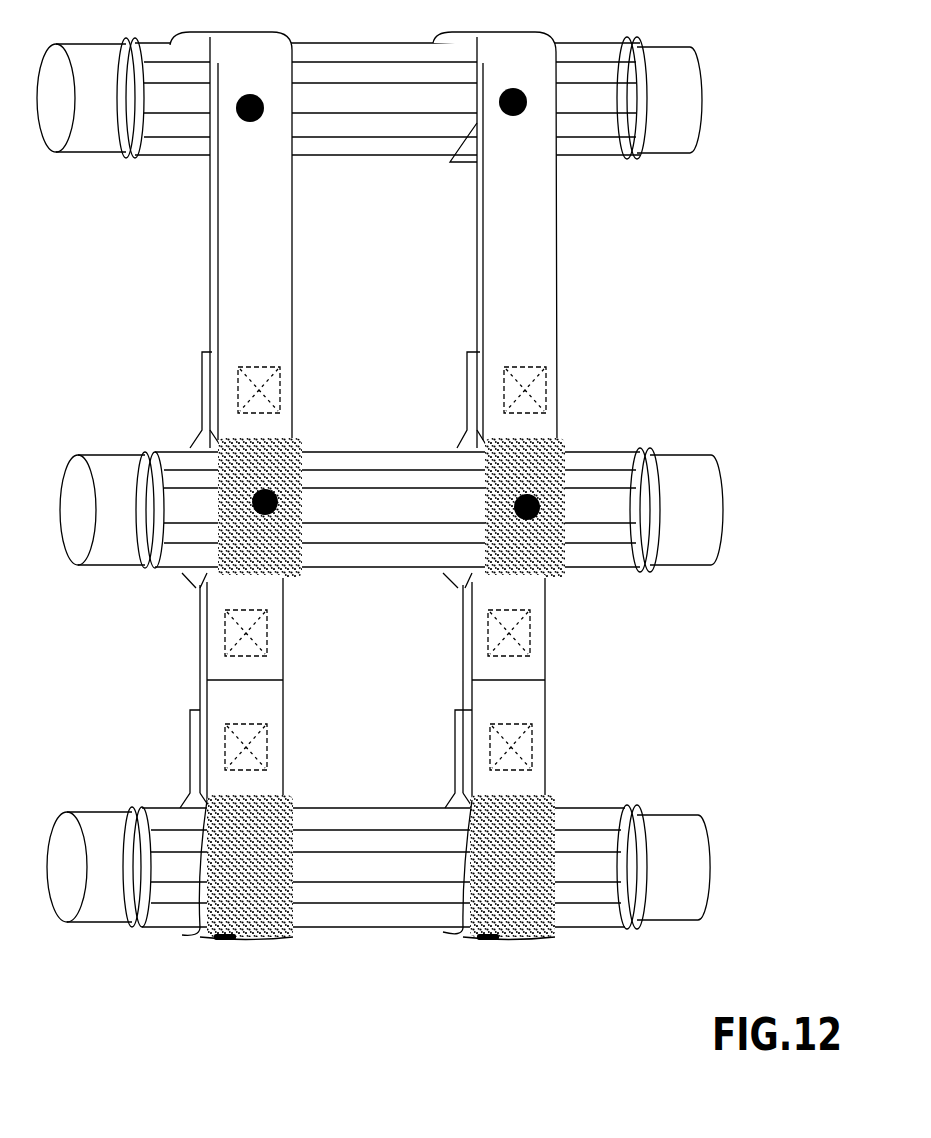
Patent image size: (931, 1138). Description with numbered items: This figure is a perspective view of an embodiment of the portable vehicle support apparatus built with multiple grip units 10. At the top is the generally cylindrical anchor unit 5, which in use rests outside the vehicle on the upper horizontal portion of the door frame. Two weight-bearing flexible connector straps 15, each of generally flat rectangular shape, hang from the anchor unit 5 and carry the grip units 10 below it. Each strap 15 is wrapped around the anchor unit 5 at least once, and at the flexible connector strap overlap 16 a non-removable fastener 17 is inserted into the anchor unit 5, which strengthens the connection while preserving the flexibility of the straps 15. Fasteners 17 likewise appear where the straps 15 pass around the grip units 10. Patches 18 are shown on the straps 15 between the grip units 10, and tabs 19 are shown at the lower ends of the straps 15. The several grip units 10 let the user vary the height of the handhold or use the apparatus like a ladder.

The anchor unit 5 is at (714, 102).
The grip unit 10 is at (385, 688).
The flexible connector strap 15 is at (367, 486).
The flexible connector strap overlap 16 is at (455, 163).
The non-removable fastener 17 is at (250, 126).
The hook and loop fastener patch 18 is at (305, 383).
The strap end tab 19 is at (225, 945).